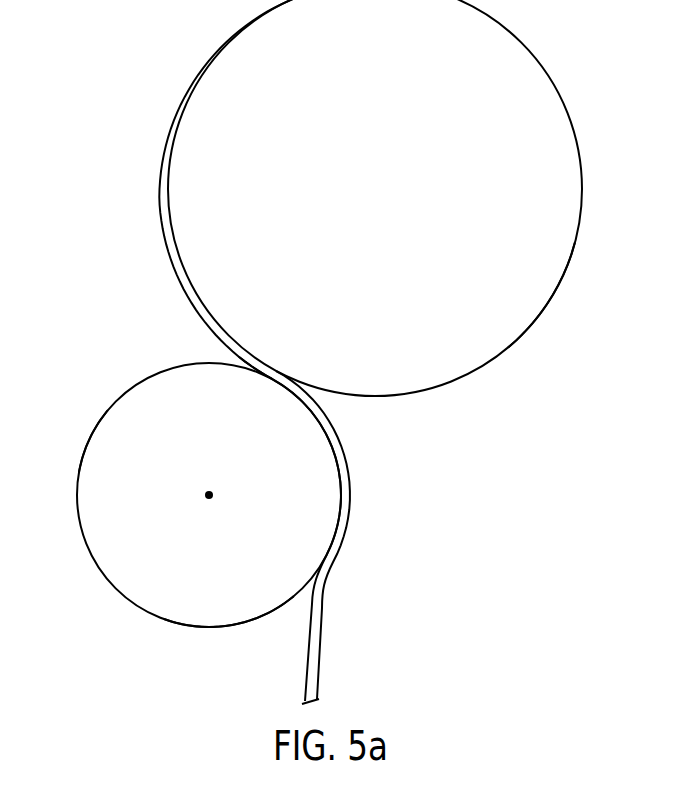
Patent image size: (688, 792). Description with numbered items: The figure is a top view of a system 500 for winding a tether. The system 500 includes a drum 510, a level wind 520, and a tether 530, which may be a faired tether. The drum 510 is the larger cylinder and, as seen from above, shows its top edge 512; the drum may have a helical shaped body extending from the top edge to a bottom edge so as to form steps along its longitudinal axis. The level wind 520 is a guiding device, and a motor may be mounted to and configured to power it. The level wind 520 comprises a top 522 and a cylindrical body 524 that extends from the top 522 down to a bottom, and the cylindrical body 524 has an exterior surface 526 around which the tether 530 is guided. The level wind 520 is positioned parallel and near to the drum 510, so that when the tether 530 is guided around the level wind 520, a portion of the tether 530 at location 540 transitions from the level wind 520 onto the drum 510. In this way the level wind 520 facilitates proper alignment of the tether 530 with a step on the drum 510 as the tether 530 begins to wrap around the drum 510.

The system for winding a tether 500 is at (78, 70).
The drum 510 is at (537, 89).
The top edge 512 is at (541, 296).
The level wind 520 is at (112, 569).
The top 522 is at (94, 470).
The cylindrical body 524 is at (268, 616).
The exterior surface 526 is at (210, 628).
The tether 530 is at (350, 517).
The location 540 is at (252, 367).